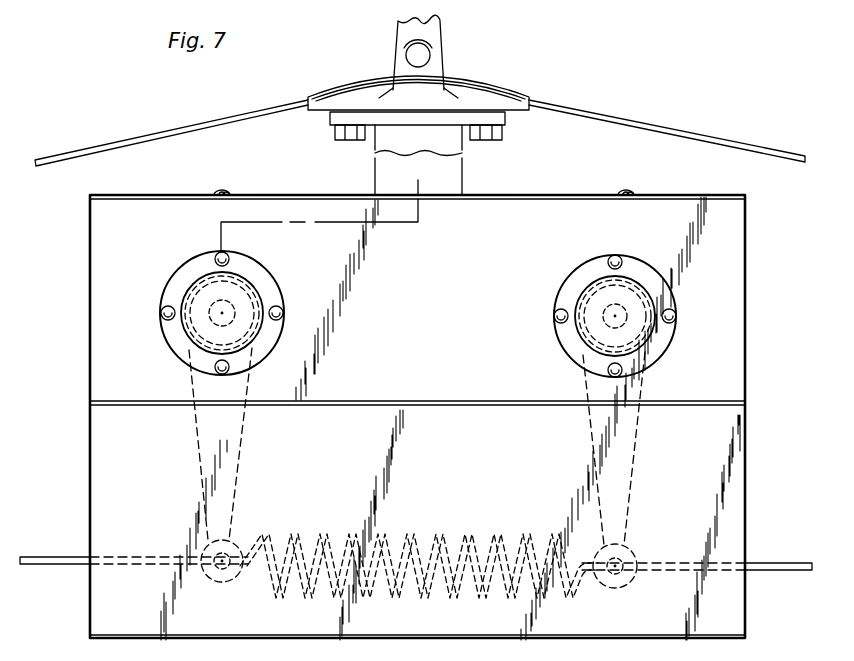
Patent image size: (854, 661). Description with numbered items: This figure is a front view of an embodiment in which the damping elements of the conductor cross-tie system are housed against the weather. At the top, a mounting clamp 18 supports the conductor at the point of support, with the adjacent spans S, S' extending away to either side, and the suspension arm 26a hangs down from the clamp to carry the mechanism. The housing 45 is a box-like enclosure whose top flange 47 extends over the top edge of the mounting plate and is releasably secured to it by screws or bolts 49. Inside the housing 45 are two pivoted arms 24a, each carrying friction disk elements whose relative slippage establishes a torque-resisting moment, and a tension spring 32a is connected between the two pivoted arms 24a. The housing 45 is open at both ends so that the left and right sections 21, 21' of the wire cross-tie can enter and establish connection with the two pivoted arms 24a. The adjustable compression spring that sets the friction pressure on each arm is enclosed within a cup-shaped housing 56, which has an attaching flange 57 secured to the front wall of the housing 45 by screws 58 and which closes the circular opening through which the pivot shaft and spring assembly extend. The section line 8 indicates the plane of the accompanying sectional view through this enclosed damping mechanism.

The section line 8- 8 is at (418, 13).
The mounting clamp 18 is at (346, 91).
The span S is at (171, 133).
The span S' is at (667, 123).
The screws or bolts 49 is at (225, 186).
The suspension arm 26a is at (378, 170).
The top flange 47 is at (525, 196).
The housing 45 is at (98, 259).
The cup-shaped housing 56 is at (262, 300).
The attaching flange 57 is at (176, 340).
The screws 58 is at (162, 313).
The pivoted arm 24a is at (238, 444).
The tension spring 32a is at (408, 530).
The left section of wire cross-tie 21 is at (134, 549).
The right section of wire cross-tie 21' is at (697, 552).